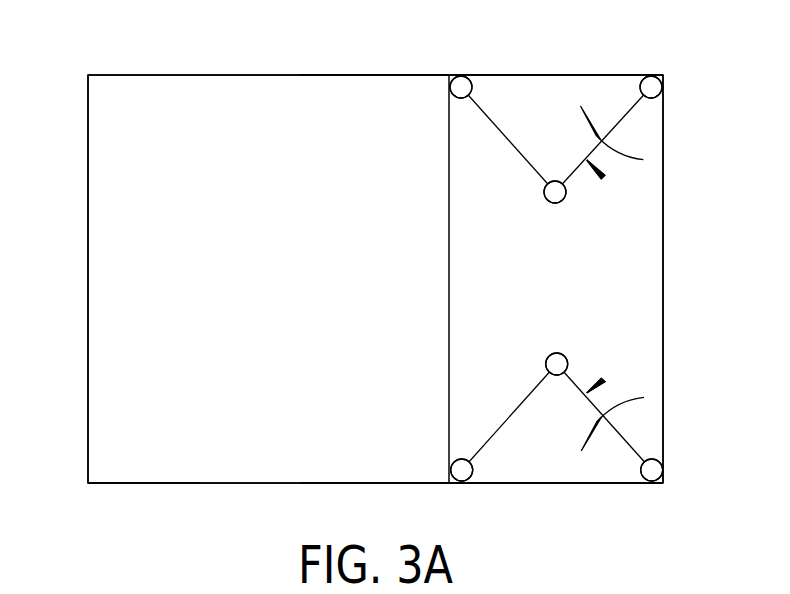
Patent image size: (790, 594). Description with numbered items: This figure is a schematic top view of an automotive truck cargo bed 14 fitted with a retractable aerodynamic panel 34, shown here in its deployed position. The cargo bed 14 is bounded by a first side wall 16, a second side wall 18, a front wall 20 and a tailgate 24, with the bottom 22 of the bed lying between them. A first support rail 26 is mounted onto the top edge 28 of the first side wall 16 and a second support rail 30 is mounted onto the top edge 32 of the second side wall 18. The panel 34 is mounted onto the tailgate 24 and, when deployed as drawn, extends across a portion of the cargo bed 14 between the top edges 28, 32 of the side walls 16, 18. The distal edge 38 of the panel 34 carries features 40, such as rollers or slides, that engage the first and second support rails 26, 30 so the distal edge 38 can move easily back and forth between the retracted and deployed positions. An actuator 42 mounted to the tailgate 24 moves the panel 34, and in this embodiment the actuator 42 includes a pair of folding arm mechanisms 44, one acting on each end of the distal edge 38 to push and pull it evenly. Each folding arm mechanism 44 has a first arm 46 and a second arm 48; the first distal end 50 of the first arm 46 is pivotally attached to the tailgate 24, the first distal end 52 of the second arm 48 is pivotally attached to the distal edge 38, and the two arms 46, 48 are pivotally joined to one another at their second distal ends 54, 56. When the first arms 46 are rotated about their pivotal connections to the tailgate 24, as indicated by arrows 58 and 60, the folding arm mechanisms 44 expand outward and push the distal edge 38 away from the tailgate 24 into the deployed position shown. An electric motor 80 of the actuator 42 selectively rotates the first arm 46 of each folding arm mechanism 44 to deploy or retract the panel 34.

The cargo bed 14 is at (118, 503).
The first side wall 16 is at (272, 483).
The second side wall 18 is at (237, 75).
The front wall 20 is at (87, 122).
The bottom 22 is at (103, 278).
The tailgate 24 is at (663, 278).
The first support rail 26 is at (617, 483).
The top edge 28 is at (405, 484).
The second support rail 30 is at (617, 75).
The top edge 32 is at (374, 75).
The panel 34 is at (557, 278).
The distal edge 38 is at (449, 278).
The features 40 is at (452, 92).
The actuator 42 is at (603, 177).
The folding arm mechanism 44 is at (657, 276).
The first arm 46 is at (623, 122).
The second arm 48 is at (508, 145).
The first distal end 50 is at (661, 96).
The first distal end 52 is at (467, 79).
The second distal end 54 is at (566, 186).
The second distal end 56 is at (544, 186).
The arrow 58 is at (597, 138).
The arrow 60 is at (596, 421).
The electric motor 80 is at (651, 87).